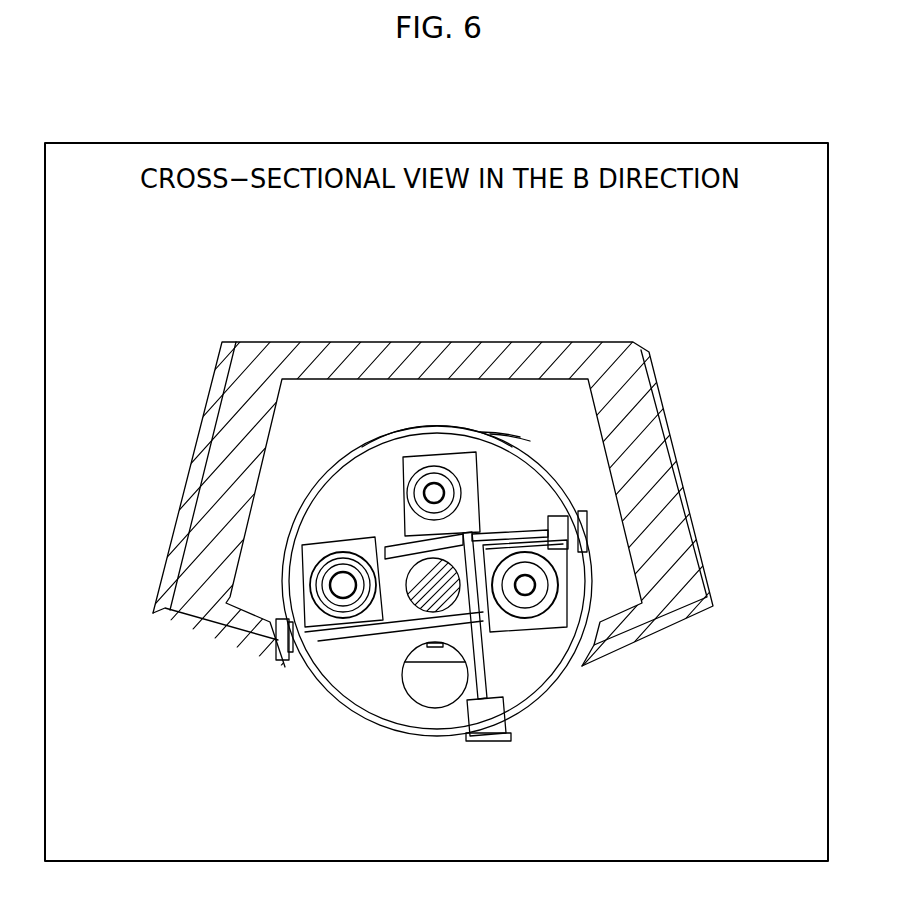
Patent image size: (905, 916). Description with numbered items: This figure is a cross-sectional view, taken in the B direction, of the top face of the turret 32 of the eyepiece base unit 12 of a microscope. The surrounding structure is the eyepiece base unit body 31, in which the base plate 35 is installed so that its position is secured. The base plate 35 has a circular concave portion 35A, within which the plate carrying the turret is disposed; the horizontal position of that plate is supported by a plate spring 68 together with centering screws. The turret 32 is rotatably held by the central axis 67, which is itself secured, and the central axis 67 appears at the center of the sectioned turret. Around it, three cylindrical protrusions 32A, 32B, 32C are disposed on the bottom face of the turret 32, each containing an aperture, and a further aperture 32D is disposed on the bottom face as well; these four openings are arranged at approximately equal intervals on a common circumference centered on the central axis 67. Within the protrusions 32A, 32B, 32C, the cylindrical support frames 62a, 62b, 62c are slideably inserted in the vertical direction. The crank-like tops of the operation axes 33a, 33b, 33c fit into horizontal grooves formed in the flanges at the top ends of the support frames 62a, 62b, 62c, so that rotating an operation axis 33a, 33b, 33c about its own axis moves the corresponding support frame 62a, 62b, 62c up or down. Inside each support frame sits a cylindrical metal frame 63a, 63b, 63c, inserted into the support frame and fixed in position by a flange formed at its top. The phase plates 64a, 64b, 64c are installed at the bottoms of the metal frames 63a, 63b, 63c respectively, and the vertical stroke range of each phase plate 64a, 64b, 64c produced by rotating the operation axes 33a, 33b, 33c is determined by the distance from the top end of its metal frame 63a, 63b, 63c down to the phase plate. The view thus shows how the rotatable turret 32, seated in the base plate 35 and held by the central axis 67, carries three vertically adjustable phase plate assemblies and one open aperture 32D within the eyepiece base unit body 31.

The eyepiece base unit 12 is at (658, 284).
The eyepiece base unit body 31 is at (673, 637).
The turret 32 is at (347, 712).
The cylindrical protrusion 32A is at (635, 669).
The cylindrical protrusion 32B is at (330, 418).
The cylindrical protrusion 32C is at (231, 491).
The aperture 32D is at (430, 708).
The operation axis 33a is at (290, 668).
The operation axis 33b is at (487, 742).
The operation axis 33c is at (587, 527).
The base plate 35 is at (568, 432).
The circular concave portion 35A is at (500, 443).
The support frame 62a is at (488, 612).
The support frame 62b is at (530, 460).
The support frame 62c is at (305, 562).
The metal frame 63a is at (548, 614).
The metal frame 63b is at (432, 470).
The metal frame 63c is at (320, 552).
The phase plate 64a is at (528, 617).
The phase plate 64b is at (414, 474).
The phase plate 64c is at (342, 550).
The central axis 67 is at (425, 612).
The plate spring 68 is at (498, 440).